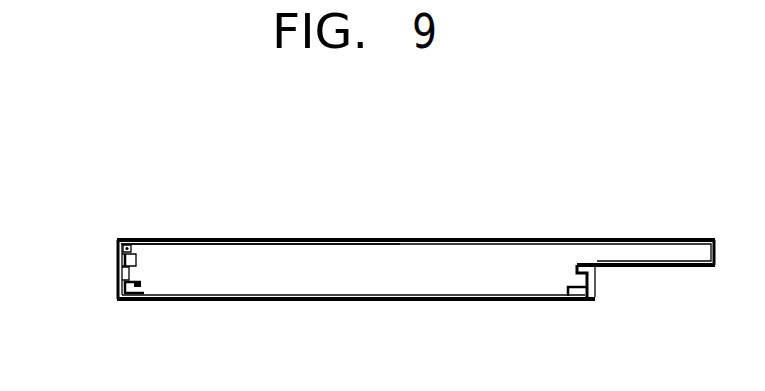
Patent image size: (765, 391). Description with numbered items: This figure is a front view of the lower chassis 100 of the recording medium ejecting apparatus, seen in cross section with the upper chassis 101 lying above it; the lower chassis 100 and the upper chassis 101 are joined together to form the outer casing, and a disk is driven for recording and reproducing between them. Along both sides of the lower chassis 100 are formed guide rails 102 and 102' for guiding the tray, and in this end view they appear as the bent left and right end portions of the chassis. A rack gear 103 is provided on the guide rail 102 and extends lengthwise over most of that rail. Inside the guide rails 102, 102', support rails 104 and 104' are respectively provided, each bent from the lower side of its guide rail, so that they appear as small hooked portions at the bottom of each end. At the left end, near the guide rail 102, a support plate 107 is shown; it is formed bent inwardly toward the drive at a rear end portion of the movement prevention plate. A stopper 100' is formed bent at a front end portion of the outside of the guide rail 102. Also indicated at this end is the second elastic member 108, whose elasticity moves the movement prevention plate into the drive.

The lower chassis 100 is at (356, 327).
The stopper 100' is at (260, 213).
The upper chassis 101 is at (480, 239).
The guide rail 102 is at (87, 304).
The guide rail 102' is at (632, 287).
The rack gear 103 is at (135, 264).
The support rail 104 is at (175, 313).
The support rail 104' is at (554, 321).
The support plate 107 is at (115, 245).
The second elastic member 108 is at (117, 267).